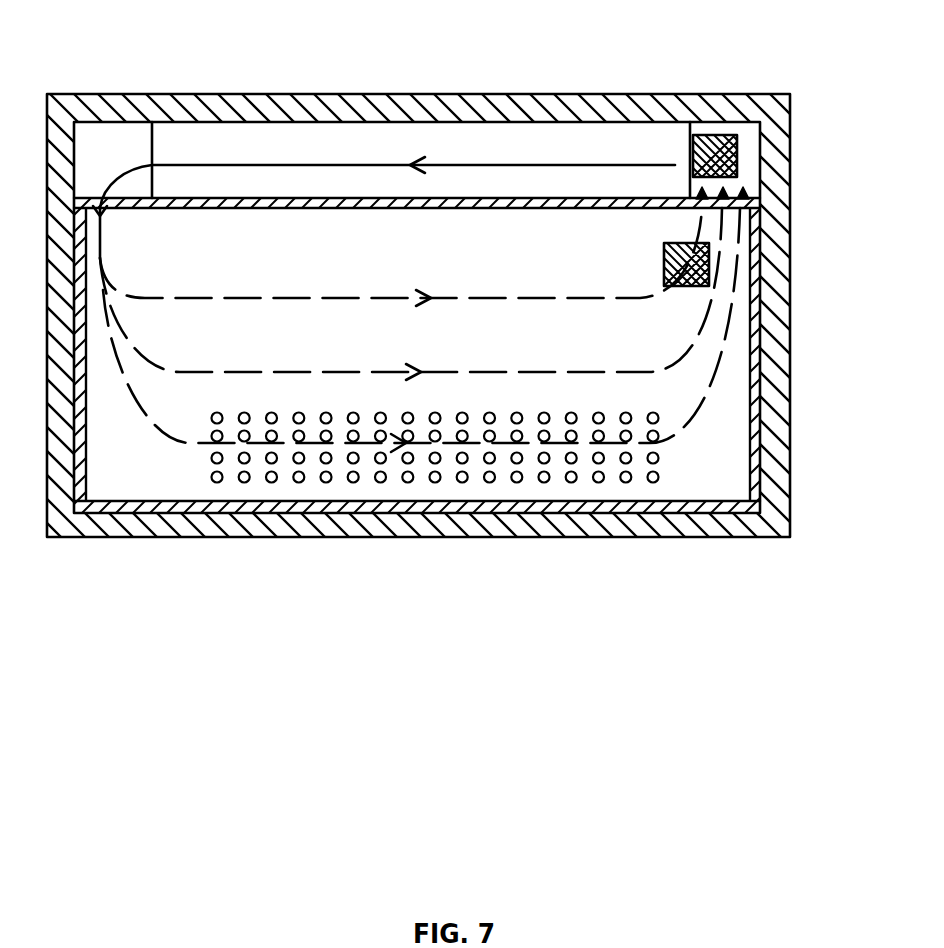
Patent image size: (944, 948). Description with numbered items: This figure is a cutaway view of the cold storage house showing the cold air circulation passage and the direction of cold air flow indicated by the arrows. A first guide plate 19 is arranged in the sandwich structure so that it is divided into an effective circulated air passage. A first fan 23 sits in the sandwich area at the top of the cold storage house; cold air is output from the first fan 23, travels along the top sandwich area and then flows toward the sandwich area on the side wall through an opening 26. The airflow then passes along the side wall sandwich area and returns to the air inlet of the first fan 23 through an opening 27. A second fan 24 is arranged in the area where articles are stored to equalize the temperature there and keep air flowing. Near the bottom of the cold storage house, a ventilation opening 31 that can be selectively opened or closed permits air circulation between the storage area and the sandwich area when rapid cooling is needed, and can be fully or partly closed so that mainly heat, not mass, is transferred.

The first guide plate 19 is at (455, 188).
The first fan 23 is at (712, 135).
The second fan 24 is at (682, 280).
The opening 26 is at (108, 137).
The opening 27 is at (752, 148).
The ventilation opening 31 is at (245, 477).